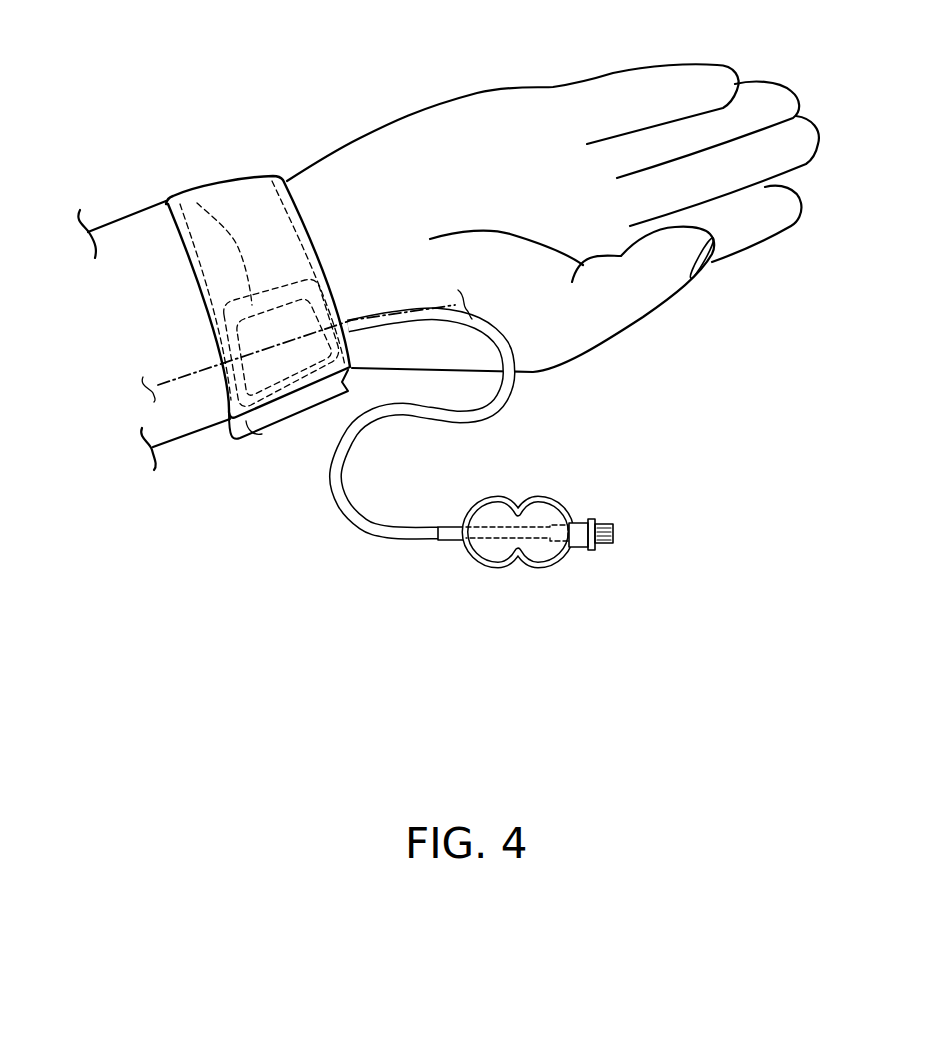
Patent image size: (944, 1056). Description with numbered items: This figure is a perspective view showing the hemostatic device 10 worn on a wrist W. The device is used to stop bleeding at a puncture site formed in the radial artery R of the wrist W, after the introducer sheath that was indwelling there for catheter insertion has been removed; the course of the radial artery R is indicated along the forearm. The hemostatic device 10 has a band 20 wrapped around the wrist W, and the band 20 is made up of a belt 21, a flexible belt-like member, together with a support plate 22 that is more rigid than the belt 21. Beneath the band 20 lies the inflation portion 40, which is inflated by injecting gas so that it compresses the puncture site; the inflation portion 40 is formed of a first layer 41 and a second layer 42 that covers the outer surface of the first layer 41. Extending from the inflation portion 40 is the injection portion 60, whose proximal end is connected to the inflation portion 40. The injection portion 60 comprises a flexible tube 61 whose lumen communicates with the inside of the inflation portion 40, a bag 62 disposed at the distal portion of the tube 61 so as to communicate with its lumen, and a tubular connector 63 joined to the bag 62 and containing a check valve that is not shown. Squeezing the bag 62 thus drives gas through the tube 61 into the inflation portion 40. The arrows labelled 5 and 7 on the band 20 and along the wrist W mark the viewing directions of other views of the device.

The hemostatic device 10 is at (232, 296).
The band 20 is at (274, 226).
The belt 21 is at (277, 172).
The support plate 22 is at (293, 187).
The inflation portion 40 is at (283, 407).
The first layer 41 is at (267, 430).
The second layer 42 is at (197, 203).
The injection portion 60 is at (493, 512).
The tube 61 is at (390, 540).
The bag 62 is at (482, 567).
The connector 63 is at (607, 547).
The section line 5 is at (209, 180).
The section line 7 is at (203, 368).
The radial artery R is at (170, 383).
The wrist W is at (210, 423).